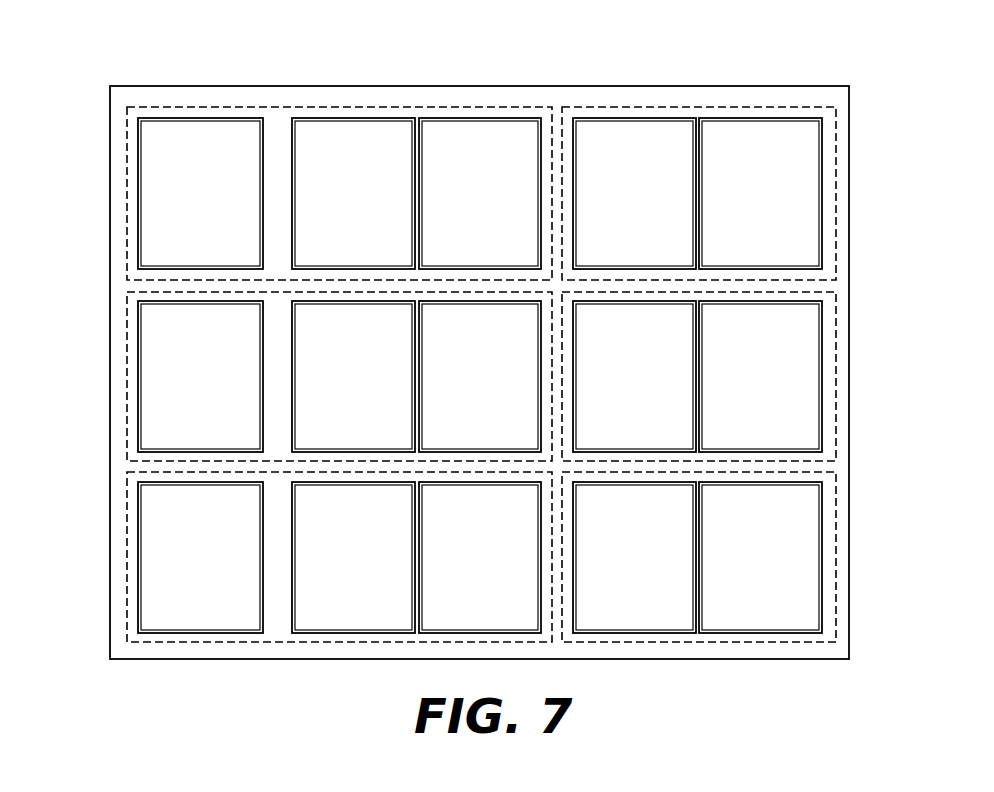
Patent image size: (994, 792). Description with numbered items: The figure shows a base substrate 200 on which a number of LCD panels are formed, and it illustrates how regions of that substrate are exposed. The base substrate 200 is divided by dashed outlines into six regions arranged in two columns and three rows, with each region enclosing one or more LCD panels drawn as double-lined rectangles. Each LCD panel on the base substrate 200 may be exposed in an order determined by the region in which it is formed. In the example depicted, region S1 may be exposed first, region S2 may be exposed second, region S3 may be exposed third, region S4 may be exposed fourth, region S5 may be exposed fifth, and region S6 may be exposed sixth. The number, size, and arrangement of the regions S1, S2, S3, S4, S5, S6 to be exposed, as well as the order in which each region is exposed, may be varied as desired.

The base substrate 200 is at (529, 87).
The region S1 is at (836, 196).
The region S2 is at (836, 378).
The region S3 is at (836, 558).
The region S4 is at (127, 557).
The region S5 is at (127, 378).
The region S6 is at (127, 196).